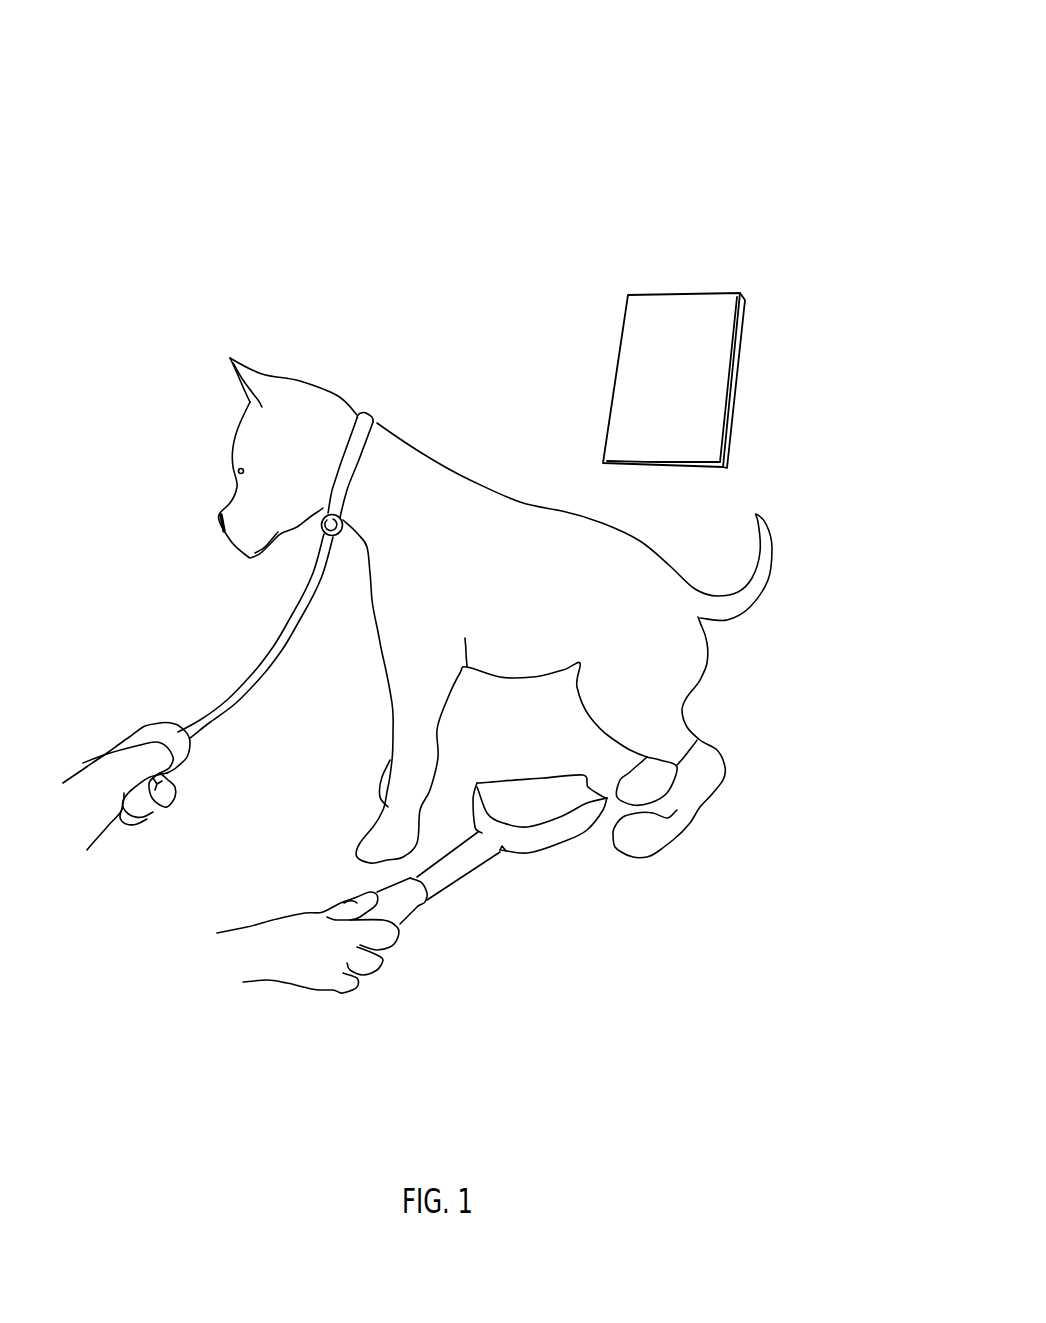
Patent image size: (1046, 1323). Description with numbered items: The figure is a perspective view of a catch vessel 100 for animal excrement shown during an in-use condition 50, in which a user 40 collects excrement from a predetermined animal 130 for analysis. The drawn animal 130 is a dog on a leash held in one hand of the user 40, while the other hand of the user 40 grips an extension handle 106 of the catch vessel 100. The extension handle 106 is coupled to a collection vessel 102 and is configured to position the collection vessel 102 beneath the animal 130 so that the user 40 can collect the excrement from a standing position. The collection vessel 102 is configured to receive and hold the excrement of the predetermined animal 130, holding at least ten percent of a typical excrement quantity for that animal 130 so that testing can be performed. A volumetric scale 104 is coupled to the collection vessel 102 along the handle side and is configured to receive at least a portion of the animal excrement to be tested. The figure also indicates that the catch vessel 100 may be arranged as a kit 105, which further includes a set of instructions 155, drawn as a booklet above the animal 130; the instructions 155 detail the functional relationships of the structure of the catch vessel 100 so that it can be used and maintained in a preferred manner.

The catch vessel for animal excrement 100 is at (712, 72).
The kit 105 is at (727, 107).
The in-use condition 50 is at (599, 531).
The set of instructions 155 is at (743, 377).
The predetermined animal 130 is at (687, 673).
The collection vessel 102 is at (570, 830).
The volumetric scale 104 is at (460, 877).
The extension handle 106 is at (412, 912).
The user 40 is at (313, 992).